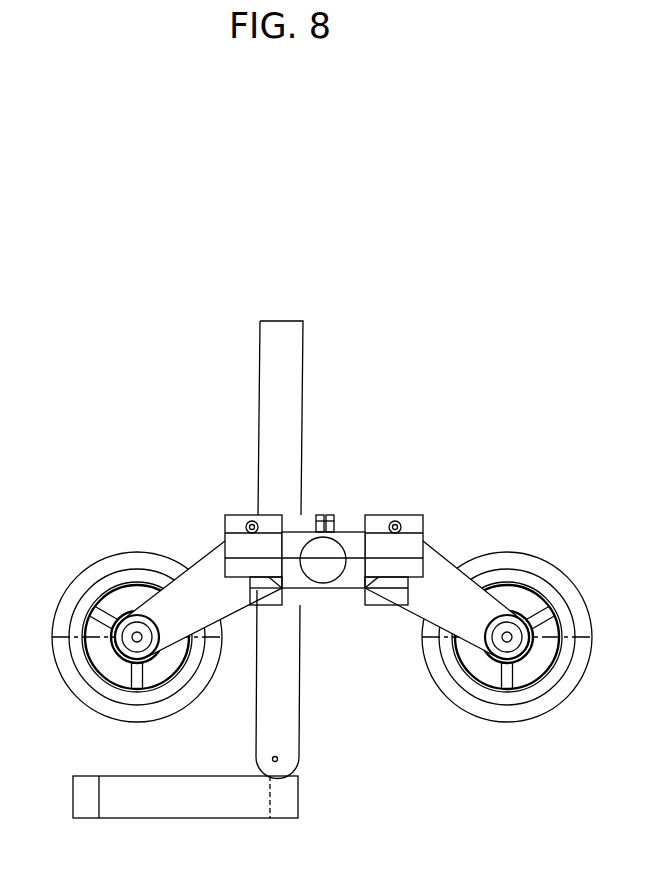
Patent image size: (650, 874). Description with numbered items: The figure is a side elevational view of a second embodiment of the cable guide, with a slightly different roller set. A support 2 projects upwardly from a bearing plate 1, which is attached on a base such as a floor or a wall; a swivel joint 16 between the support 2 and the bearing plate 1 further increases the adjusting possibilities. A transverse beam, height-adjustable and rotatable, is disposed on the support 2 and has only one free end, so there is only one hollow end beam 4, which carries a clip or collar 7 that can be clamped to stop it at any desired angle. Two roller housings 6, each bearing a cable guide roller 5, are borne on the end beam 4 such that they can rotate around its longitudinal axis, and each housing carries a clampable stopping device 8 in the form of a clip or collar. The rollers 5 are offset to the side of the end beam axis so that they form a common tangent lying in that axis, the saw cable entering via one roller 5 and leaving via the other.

The bearing plate 1 is at (267, 798).
The support 2 is at (278, 715).
The hollow end beam 4 is at (350, 583).
The cable guide roller 5 is at (511, 706).
The roller housing 6 is at (115, 645).
The clip or collar 7 is at (328, 528).
The clampable stopping device 8 is at (258, 527).
The swivel joint 16 is at (277, 760).